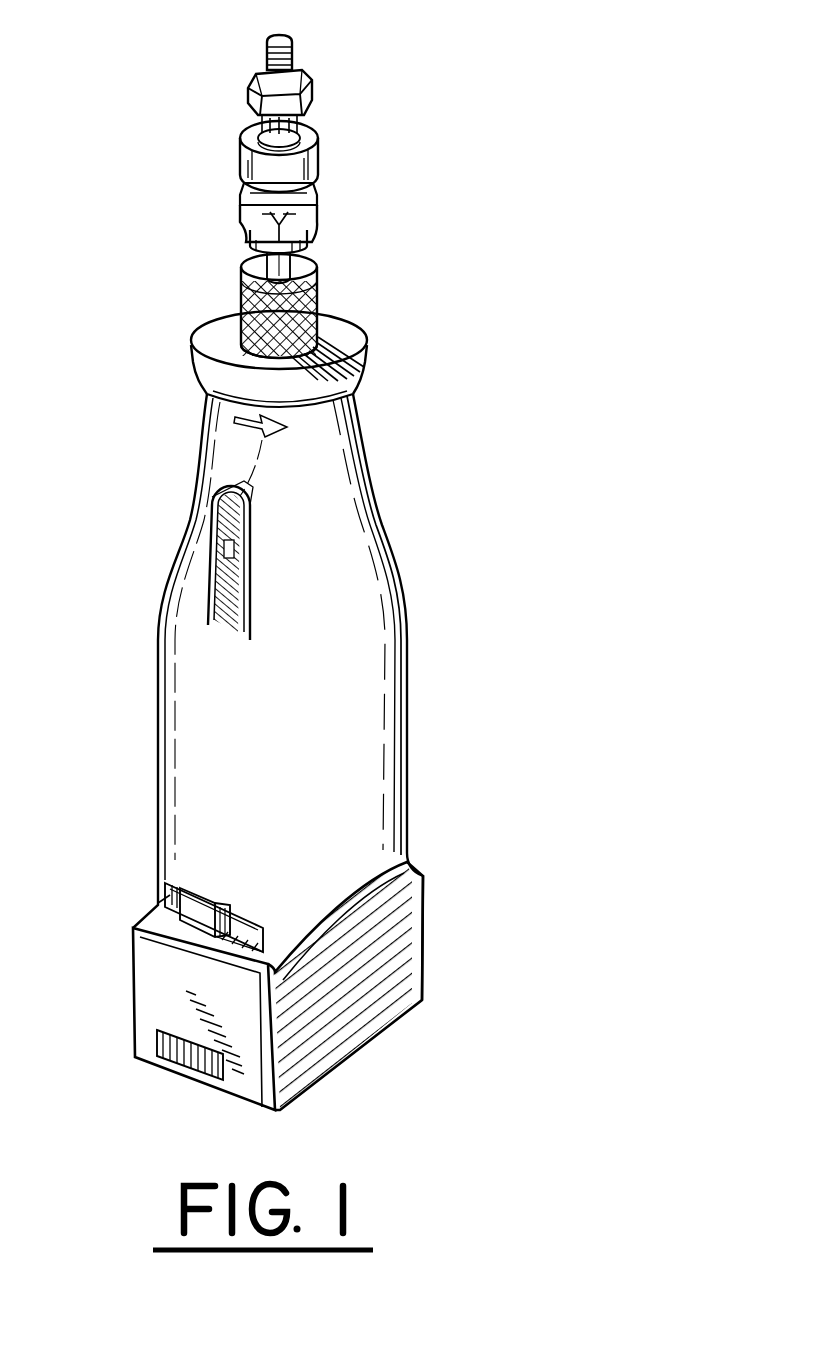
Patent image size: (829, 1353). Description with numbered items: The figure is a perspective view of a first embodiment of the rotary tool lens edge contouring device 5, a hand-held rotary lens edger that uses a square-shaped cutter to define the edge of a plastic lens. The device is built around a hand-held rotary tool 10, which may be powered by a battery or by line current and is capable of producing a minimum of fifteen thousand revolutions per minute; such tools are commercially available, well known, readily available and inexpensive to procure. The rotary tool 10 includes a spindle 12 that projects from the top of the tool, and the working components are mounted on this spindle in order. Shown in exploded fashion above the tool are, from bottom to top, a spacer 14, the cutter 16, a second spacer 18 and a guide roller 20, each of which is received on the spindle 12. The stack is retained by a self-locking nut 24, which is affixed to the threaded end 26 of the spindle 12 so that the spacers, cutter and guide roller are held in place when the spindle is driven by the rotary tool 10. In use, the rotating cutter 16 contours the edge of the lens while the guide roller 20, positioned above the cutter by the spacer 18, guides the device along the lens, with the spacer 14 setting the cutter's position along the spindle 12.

The rotary tool lens edge contouring device 5 is at (386, 447).
The hand-held rotary tool 10 is at (168, 710).
The spindle 12 is at (303, 260).
The spacer 14 is at (250, 242).
The cutter 16 is at (317, 220).
The spacer 18 is at (243, 197).
The guide roller 20 is at (317, 157).
The self-locking nut 24 is at (248, 92).
The threaded end 26 is at (293, 52).